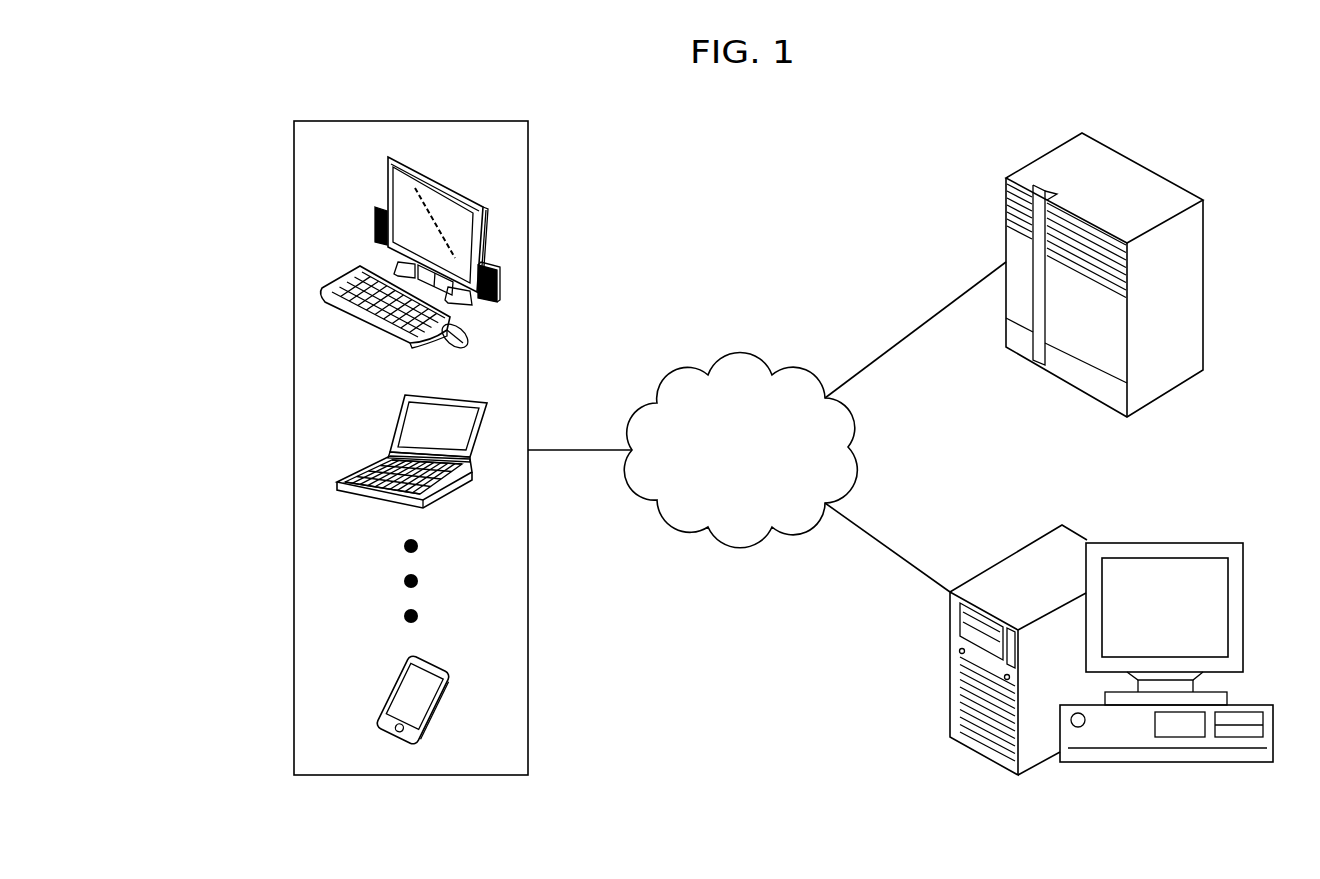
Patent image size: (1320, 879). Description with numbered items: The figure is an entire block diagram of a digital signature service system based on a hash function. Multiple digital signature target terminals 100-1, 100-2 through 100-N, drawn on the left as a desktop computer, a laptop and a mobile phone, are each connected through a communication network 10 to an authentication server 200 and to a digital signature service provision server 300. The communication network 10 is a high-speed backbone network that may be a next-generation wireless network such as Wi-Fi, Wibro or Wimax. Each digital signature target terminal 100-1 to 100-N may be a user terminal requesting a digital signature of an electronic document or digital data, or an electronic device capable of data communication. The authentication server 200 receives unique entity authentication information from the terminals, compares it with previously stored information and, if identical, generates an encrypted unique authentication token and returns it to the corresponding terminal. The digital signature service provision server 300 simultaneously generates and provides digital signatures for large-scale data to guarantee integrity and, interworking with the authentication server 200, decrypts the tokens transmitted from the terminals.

The communication network 10 is at (735, 352).
The digital signature target terminal 100-1 is at (376, 220).
The digital signature target terminal 100-2 is at (392, 437).
The digital signature target terminal 100-N is at (392, 692).
The authentication server 200 is at (1143, 167).
The digital signature service provision server 300 is at (1165, 542).